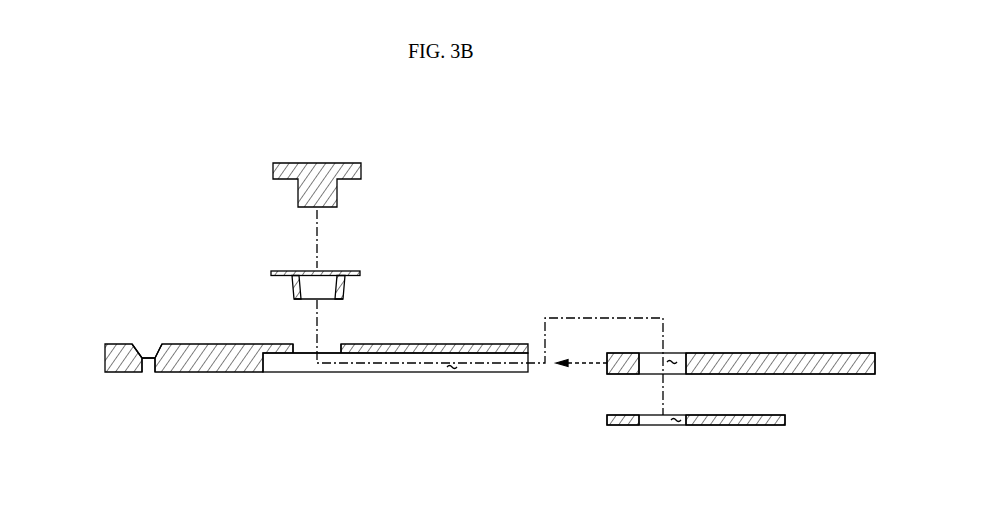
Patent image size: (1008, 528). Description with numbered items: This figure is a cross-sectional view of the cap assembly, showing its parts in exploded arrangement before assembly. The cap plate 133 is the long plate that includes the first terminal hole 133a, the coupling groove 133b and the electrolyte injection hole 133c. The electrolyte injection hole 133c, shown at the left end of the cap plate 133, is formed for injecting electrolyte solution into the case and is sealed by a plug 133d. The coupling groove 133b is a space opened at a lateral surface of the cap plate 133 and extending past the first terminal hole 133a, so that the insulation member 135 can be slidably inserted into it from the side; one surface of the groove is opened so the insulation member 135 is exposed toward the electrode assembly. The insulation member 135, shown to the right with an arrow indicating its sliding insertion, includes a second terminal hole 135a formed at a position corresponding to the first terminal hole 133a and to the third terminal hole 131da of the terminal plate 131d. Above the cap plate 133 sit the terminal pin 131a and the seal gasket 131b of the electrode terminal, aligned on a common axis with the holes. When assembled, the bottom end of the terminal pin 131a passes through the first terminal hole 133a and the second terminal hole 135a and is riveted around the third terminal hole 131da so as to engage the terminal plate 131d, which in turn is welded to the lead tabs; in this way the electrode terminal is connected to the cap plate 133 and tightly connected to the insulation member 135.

The terminal pin 131a is at (361, 170).
The seal gasket 131b is at (360, 273).
The terminal plate 131d is at (755, 426).
The third terminal hole 131da is at (676, 426).
The cap plate 133 is at (226, 352).
The first terminal hole 133a is at (328, 344).
The coupling groove 133b is at (452, 373).
The electrolyte injection hole 133c is at (139, 348).
The plug 133d is at (153, 351).
The insulation member 135 is at (790, 353).
The second terminal hole 135a is at (676, 358).